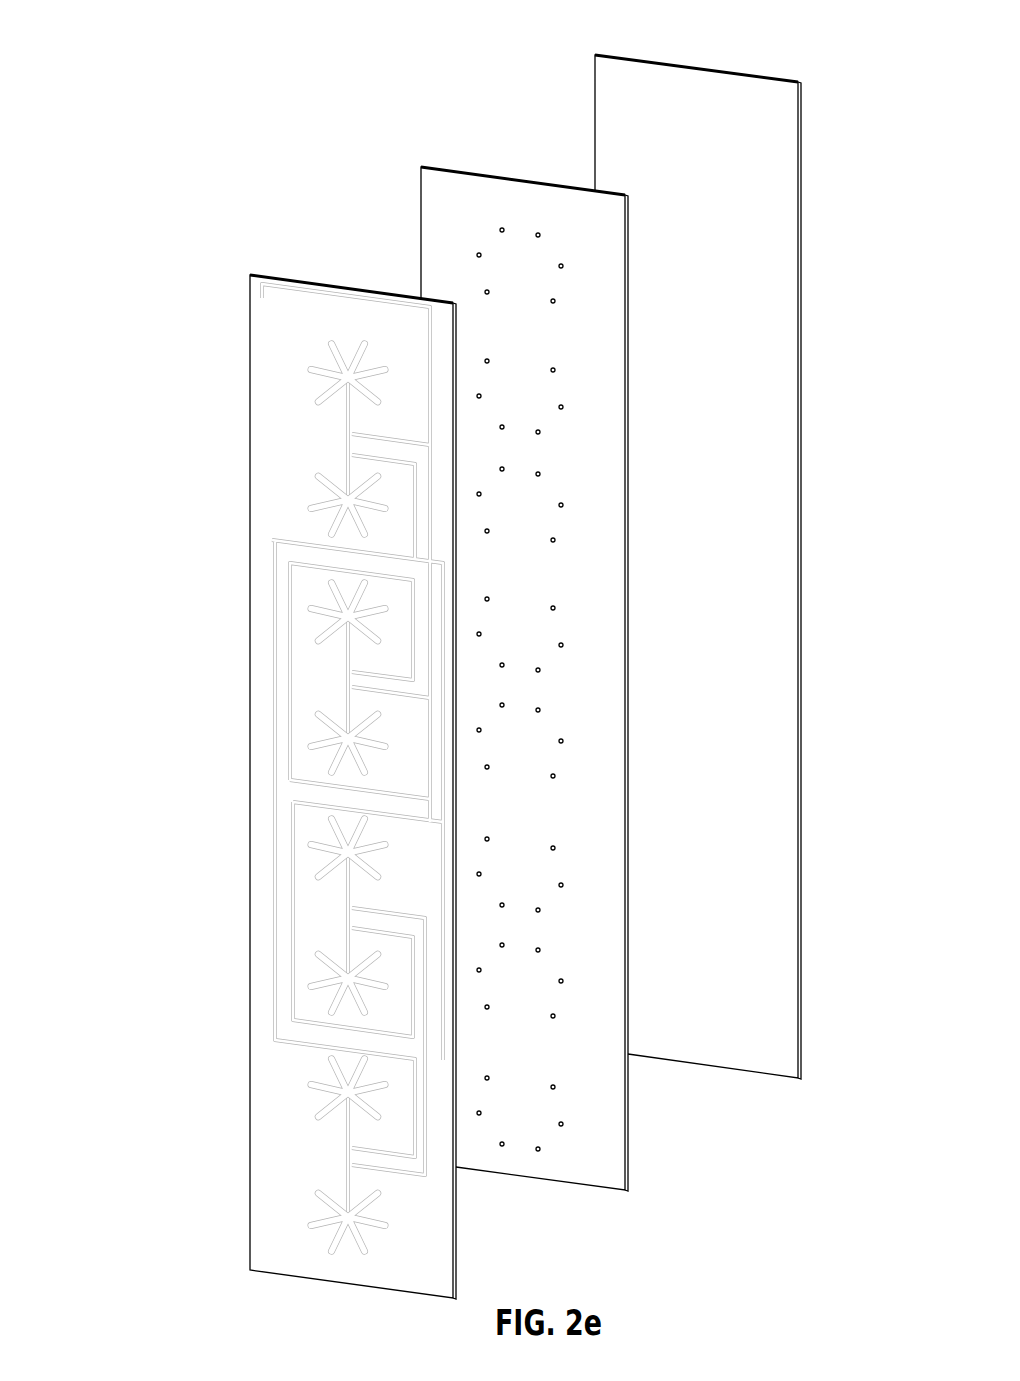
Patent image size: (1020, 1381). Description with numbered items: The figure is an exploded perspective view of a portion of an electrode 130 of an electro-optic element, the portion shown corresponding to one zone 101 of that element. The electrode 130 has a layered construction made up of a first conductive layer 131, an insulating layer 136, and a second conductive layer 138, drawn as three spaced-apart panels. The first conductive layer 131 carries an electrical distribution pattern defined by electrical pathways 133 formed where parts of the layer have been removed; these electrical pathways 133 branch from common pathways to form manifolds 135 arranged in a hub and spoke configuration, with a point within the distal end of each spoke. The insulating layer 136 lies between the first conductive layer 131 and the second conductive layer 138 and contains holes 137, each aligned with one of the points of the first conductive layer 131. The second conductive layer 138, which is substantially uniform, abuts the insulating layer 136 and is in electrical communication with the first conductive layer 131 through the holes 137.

The zone 101 is at (240, 98).
The electrode 130 is at (468, 652).
The first conductive layer 131 is at (272, 277).
The electrical pathways 133 is at (355, 442).
The manifold 135 is at (300, 347).
The insulating layer 136 is at (440, 167).
The holes 137 is at (561, 506).
The second conductive layer 138 is at (613, 56).